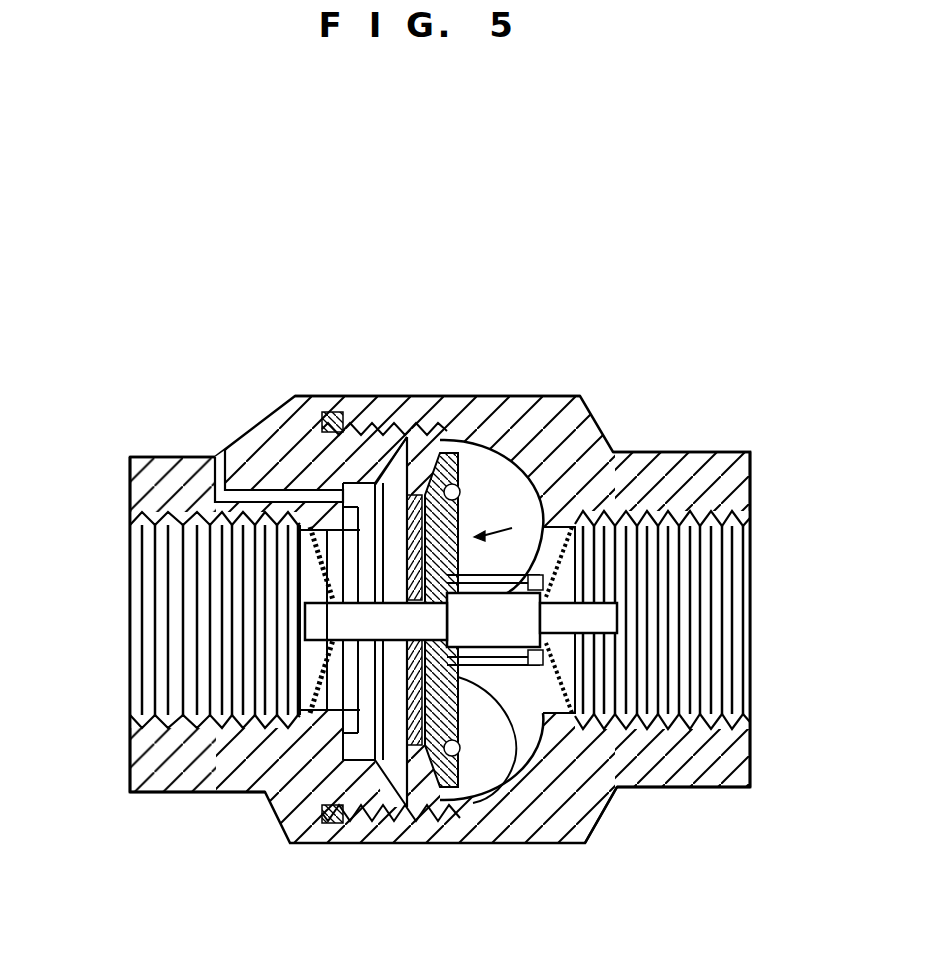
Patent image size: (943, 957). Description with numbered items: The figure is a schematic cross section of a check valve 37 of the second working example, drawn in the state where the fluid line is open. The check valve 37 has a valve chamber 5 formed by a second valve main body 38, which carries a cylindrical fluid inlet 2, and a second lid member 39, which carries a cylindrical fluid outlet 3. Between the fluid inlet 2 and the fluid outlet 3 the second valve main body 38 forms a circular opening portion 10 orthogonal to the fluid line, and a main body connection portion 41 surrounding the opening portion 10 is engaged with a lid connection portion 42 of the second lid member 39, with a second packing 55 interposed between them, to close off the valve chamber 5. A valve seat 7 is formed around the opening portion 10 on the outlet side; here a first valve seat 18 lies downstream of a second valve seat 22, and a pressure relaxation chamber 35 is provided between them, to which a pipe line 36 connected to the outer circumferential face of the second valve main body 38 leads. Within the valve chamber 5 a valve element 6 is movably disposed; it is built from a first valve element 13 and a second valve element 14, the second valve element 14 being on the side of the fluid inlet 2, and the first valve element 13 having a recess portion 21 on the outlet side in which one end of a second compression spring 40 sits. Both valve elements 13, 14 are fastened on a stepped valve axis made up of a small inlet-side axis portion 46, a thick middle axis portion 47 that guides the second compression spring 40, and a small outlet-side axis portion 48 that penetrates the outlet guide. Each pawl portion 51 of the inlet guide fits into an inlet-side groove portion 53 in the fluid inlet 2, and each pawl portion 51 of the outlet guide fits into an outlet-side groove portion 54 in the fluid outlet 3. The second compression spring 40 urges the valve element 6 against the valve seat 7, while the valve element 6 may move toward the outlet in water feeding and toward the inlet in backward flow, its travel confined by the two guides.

The fluid inlet 2 is at (150, 612).
The fluid outlet 3 is at (720, 636).
The valve chamber 5 is at (492, 487).
The valve element 6 is at (505, 610).
The valve seat 7 is at (283, 396).
The opening portion 10 is at (345, 578).
The first valve element 13 is at (462, 790).
The second valve element 14 is at (432, 800).
The first valve seat 18 is at (440, 438).
The recess portion 21 is at (523, 668).
The second valve seat 22 is at (385, 492).
The pressure relaxation chamber 35 is at (296, 793).
The pipe line 36 is at (220, 456).
The check valve 37 is at (436, 250).
The second valve main body 38 is at (131, 469).
The second lid member 39 is at (745, 487).
The second compression spring 40 is at (614, 802).
The main body connection portion 41 is at (303, 843).
The lid connection portion 42 is at (412, 812).
The inlet-side axis portion 46 is at (325, 622).
The middle axis portion 47 is at (562, 578).
The outlet-side axis portion 48 is at (600, 650).
The pawl portion 51 is at (198, 793).
The inlet-side groove portion 53 is at (245, 793).
The outlet-side groove portion 54 is at (668, 790).
The second packing 55 is at (345, 822).